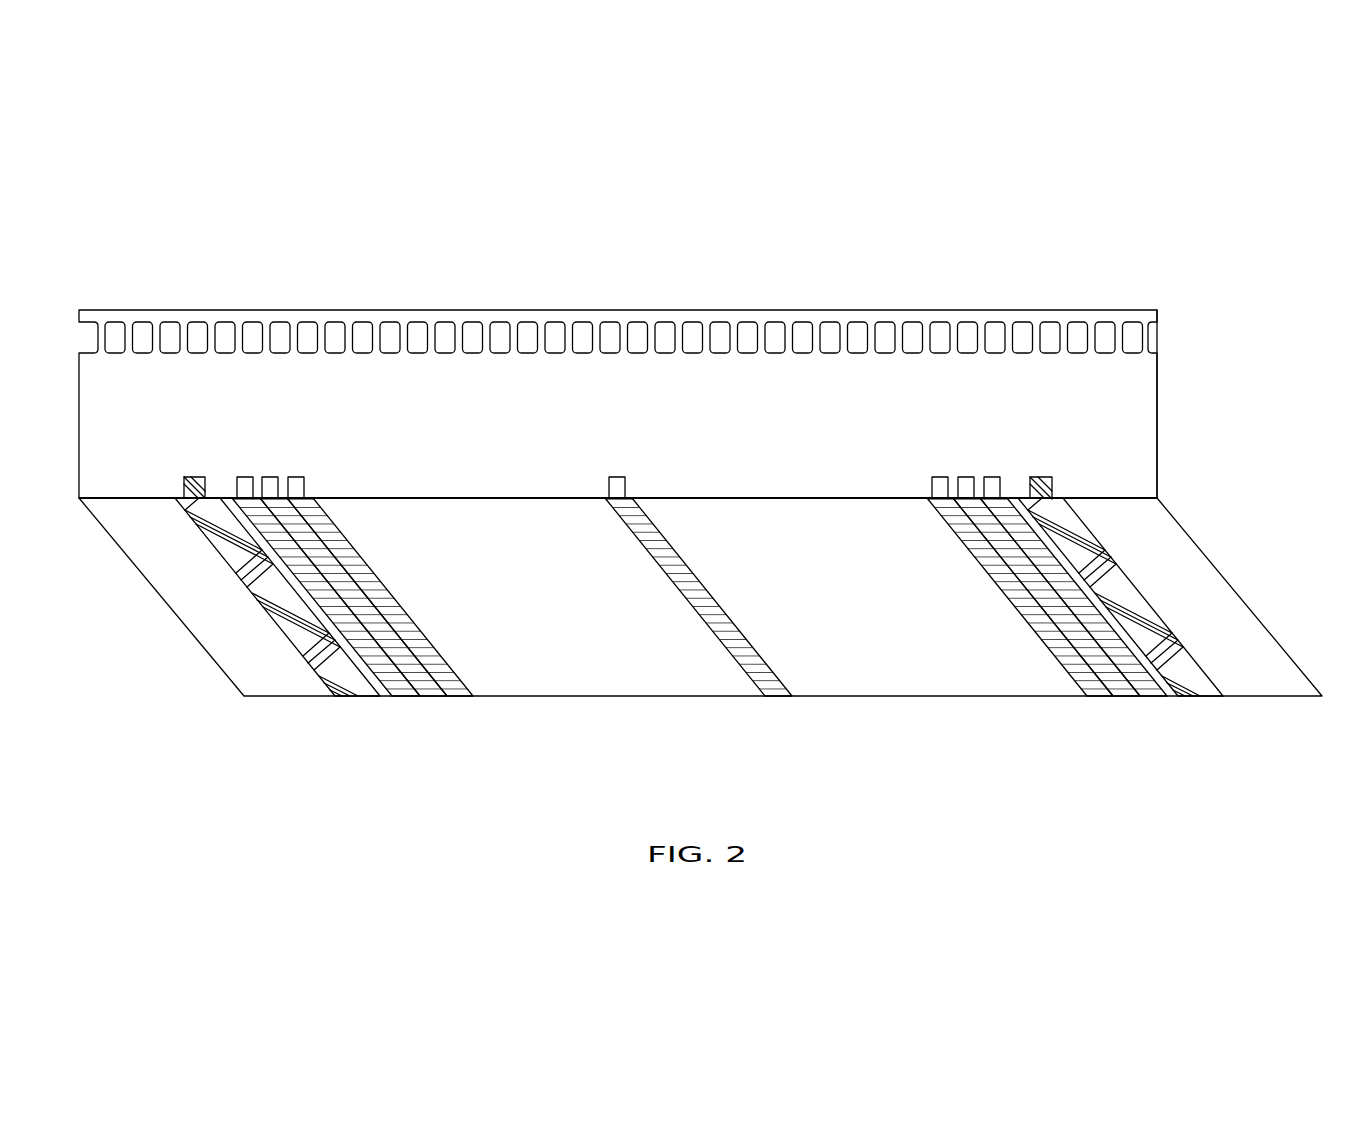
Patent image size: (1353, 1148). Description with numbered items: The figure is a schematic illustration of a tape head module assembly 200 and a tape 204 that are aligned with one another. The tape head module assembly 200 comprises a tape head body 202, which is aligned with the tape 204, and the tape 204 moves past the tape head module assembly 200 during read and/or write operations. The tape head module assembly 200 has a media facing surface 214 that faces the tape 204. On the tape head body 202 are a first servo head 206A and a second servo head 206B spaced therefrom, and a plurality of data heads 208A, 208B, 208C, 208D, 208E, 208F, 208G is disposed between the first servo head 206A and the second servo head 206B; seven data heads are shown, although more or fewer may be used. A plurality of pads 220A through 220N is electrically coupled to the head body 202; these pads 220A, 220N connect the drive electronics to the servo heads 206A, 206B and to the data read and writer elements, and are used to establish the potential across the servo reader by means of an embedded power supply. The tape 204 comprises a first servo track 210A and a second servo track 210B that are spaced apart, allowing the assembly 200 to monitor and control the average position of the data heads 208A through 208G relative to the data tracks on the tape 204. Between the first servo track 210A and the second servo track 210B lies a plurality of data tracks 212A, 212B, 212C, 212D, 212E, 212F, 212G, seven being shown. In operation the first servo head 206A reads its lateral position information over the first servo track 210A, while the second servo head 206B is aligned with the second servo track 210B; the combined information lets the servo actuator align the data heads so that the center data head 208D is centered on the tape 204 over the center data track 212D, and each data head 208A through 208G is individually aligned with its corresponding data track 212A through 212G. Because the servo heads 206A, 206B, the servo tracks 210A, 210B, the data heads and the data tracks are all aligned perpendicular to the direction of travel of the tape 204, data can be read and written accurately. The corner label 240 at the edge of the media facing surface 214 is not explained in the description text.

The tape head module assembly 200 is at (190, 160).
The tape head body 202 is at (1157, 390).
The tape 204 is at (1244, 600).
The first servo head 206A is at (197, 476).
The second servo head 206B is at (1040, 476).
The data head 208A is at (242, 476).
The data head 208B is at (268, 476).
The data head 208C is at (295, 476).
The data head 208D is at (616, 476).
The data head 208E is at (939, 476).
The data head 208F is at (965, 476).
The data head 208G is at (990, 476).
The first servo track 210A is at (362, 697).
The second servo track 210B is at (1205, 697).
The data track 212A is at (410, 697).
The data track 212B is at (435, 697).
The data track 212C is at (463, 697).
The data track 212D is at (782, 697).
The data track 212E is at (1105, 697).
The data track 212F is at (1131, 697).
The data track 212G is at (1159, 697).
The media facing surface 214 is at (1110, 498).
The pad 220A is at (170, 322).
The pad 220N is at (1085, 322).
The edge of module 240 is at (1158, 498).